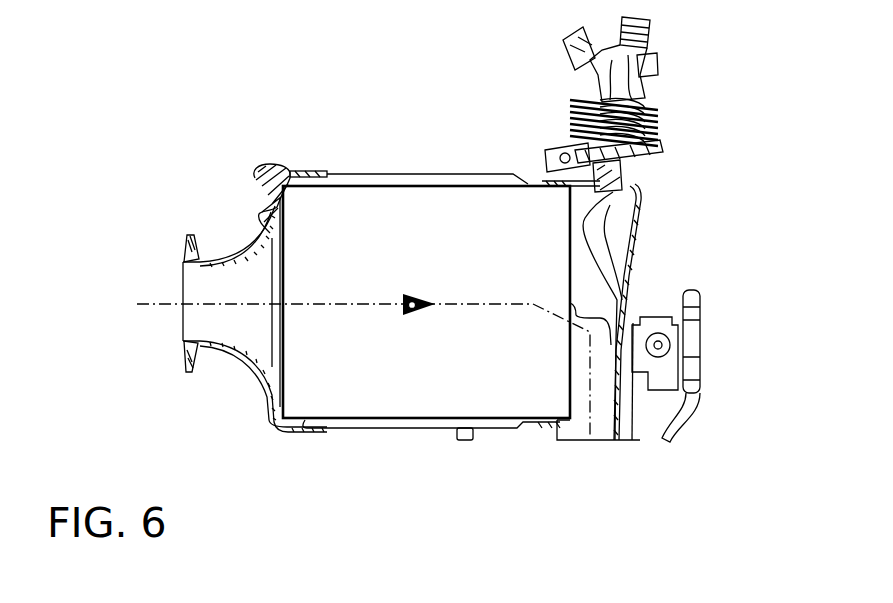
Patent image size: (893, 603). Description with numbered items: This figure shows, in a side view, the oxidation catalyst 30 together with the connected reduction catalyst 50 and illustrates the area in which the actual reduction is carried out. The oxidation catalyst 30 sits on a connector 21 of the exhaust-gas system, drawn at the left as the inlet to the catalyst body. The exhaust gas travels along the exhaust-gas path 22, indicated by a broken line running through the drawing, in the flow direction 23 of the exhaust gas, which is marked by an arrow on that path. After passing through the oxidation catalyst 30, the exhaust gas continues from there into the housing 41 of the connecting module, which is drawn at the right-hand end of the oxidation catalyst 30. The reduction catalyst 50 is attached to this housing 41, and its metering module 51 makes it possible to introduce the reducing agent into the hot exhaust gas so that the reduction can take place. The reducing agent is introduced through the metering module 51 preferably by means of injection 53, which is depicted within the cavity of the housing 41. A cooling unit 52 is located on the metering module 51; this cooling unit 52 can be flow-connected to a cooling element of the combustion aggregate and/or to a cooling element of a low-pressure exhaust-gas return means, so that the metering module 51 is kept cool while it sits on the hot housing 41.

The connector 21 is at (188, 358).
The exhaust-gas path 22 is at (164, 304).
The flow direction 23 is at (412, 308).
The oxidation catalyst 30 is at (365, 218).
The housing 41 is at (624, 276).
The reduction catalyst 50 is at (658, 106).
The metering module 51 is at (640, 127).
The cooling unit 52 is at (668, 95).
The injection 53 is at (602, 235).